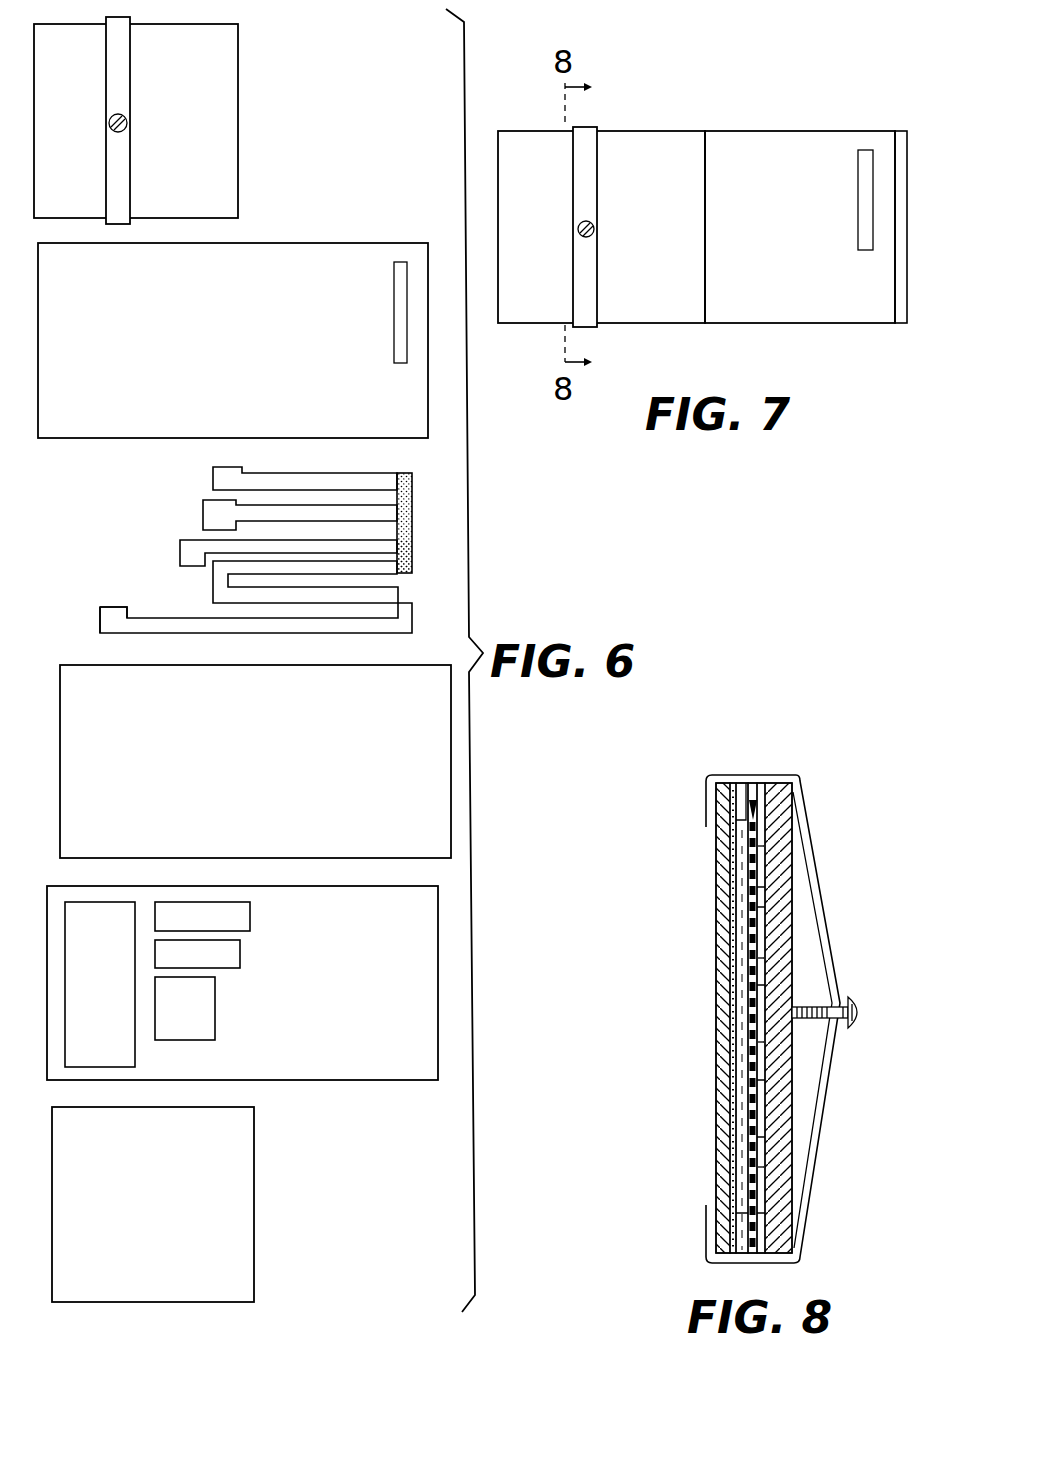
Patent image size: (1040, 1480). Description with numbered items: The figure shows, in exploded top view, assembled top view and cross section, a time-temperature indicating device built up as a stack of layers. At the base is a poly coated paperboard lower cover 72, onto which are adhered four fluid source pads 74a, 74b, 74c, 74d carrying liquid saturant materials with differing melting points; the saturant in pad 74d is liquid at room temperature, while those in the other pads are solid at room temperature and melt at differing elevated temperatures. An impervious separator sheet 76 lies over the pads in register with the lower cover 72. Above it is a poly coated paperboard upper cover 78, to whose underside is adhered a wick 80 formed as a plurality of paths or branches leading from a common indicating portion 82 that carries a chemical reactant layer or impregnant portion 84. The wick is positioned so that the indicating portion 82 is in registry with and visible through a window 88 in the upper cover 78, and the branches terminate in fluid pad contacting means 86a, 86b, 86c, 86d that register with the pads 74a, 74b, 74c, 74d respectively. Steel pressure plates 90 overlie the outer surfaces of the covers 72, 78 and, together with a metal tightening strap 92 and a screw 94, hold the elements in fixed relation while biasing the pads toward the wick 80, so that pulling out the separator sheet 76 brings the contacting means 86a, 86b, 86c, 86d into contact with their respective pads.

In FIG. 6, the lower cover 72 is at (367, 1067).
In FIG. 8, the lower cover 72 is at (730, 783).
In FIG. 6, the fluid source pad 74a is at (251, 917).
In FIG. 6, the fluid source pad 74b is at (241, 955).
In FIG. 6, the fluid source pad 74c is at (203, 1022).
In FIG. 6, the fluid source pad 74d is at (120, 1053).
In FIG. 8, the fluid source pad 74d is at (740, 923).
In FIG. 6, the separator sheet 76 is at (70, 733).
In FIG. 7, the separator sheet 76 is at (900, 122).
In FIG. 8, the separator sheet 76 is at (749, 783).
In FIG. 6, the upper cover 78 is at (320, 247).
In FIG. 7, the upper cover 78 is at (780, 147).
In FIG. 8, the upper cover 78 is at (773, 783).
In FIG. 6, the wick 80 is at (98, 620).
In FIG. 8, the wick 80 is at (757, 800).
In FIG. 6, the indicating portion 82 is at (409, 547).
In FIG. 6, the chemical reactant layer 84 is at (402, 490).
In FIG. 6, the fluid pad contacting means 86a is at (212, 472).
In FIG. 8, the fluid pad contacting means 86a is at (758, 846).
In FIG. 6, the fluid pad contacting means 86b is at (203, 516).
In FIG. 8, the fluid pad contacting means 86b is at (758, 958).
In FIG. 6, the fluid pad contacting means 86c is at (185, 550).
In FIG. 8, the fluid pad contacting means 86c is at (762, 1042).
In FIG. 6, the fluid pad contacting means 86d is at (111, 607).
In FIG. 8, the fluid pad contacting means 86d is at (763, 1167).
In FIG. 6, the window 88 is at (396, 303).
In FIG. 7, the window 88 is at (858, 188).
In FIG. 6, the steel pressure plate 90 is at (238, 83).
In FIG. 7, the steel pressure plate 90 is at (707, 143).
In FIG. 8, the steel pressure plate 90 is at (718, 870).
In FIG. 6, the metal tightening strap 92 is at (126, 164).
In FIG. 7, the metal tightening strap 92 is at (573, 188).
In FIG. 8, the metal tightening strap 92 is at (827, 948).
In FIG. 6, the screw 94 is at (125, 116).
In FIG. 7, the screw 94 is at (578, 228).
In FIG. 8, the screw 94 is at (858, 1002).